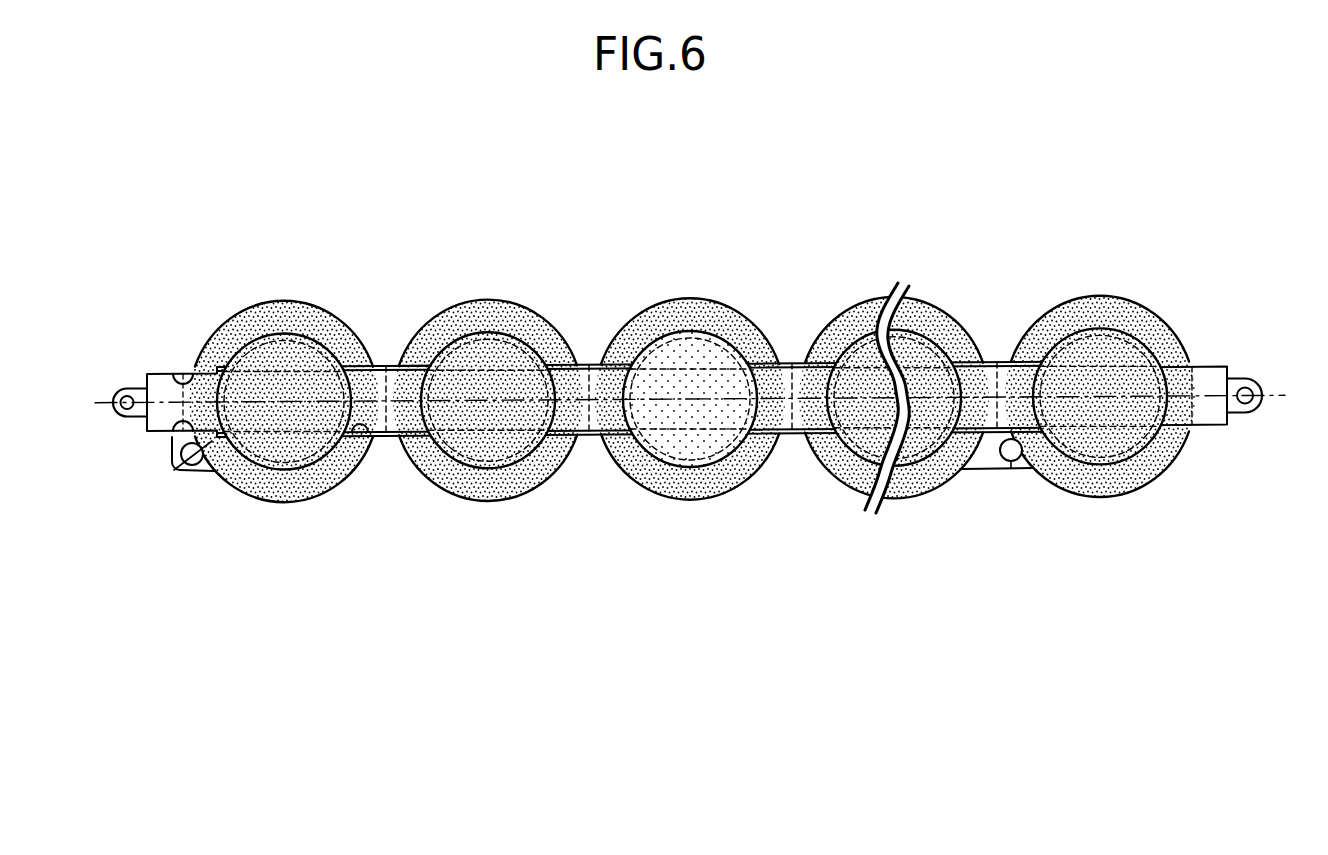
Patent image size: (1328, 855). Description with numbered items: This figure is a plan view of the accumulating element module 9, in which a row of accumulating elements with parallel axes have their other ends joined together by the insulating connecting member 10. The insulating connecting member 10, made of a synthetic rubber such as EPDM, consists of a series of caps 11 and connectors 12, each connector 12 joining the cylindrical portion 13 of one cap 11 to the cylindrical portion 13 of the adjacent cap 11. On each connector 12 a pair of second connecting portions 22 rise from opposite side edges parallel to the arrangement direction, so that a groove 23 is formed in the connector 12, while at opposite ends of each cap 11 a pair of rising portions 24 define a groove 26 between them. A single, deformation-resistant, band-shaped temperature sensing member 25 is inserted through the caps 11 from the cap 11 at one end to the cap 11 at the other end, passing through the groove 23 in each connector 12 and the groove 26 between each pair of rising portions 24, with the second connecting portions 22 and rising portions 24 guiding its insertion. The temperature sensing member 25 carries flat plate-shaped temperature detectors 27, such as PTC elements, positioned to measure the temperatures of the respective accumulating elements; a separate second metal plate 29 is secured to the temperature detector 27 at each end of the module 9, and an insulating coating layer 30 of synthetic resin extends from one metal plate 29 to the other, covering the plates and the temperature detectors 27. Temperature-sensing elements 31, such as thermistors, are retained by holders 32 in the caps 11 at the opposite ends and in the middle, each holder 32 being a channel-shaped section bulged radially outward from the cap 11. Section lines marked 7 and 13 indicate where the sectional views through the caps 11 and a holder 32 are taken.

The section line 7- 7 is at (60, 378).
The accumulating element module 9 is at (948, 297).
The insulating connecting member 10 is at (700, 296).
The cap 11 is at (293, 299).
The connector 12 is at (415, 362).
The cylindrical portion 13 is at (172, 472).
The second connecting portions 22 is at (352, 366).
The groove 23 is at (362, 436).
The rising portions 24 is at (184, 372).
The temperature sensing member 25 is at (1213, 368).
The groove 26 is at (180, 376).
The temperature detectors 27 is at (245, 401).
The second metal plate 29 is at (124, 389).
The insulating coating layer 30 is at (1210, 428).
The temperature-sensing elements 31 is at (198, 470).
The holder 32 is at (182, 477).